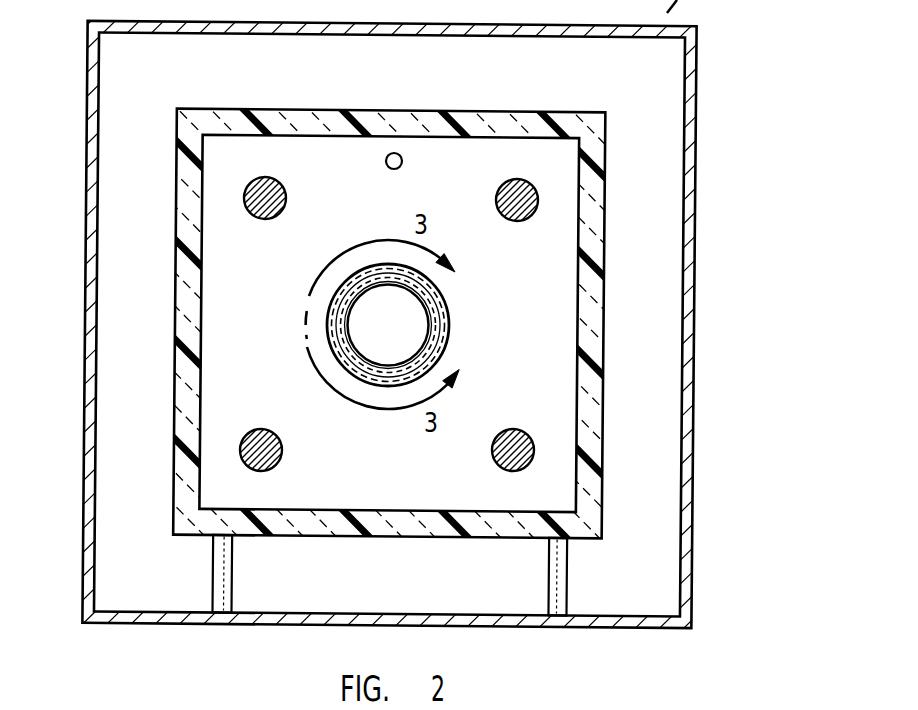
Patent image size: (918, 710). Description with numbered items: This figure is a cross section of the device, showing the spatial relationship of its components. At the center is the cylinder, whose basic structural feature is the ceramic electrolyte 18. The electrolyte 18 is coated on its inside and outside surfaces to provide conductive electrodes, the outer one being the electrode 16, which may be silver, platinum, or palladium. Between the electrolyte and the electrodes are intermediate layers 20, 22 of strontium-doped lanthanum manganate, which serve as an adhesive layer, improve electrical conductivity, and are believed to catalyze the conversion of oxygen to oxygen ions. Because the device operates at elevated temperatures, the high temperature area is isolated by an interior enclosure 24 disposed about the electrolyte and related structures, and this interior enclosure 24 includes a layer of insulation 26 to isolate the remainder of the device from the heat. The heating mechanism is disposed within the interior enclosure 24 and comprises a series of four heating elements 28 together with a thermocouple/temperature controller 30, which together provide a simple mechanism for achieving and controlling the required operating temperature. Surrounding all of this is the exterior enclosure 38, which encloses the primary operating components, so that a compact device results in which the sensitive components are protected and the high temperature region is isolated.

The electrode 16 is at (452, 328).
The electrolyte 18 is at (437, 306).
The intermediate layer 20 is at (420, 356).
The intermediate layer 22 is at (452, 341).
The interior enclosure 24 is at (176, 303).
The layer of insulation 26 is at (192, 342).
The heating elements 28 is at (264, 219).
The thermocouple/temperature controller 30 is at (386, 162).
The exterior enclosure 38 is at (694, 250).